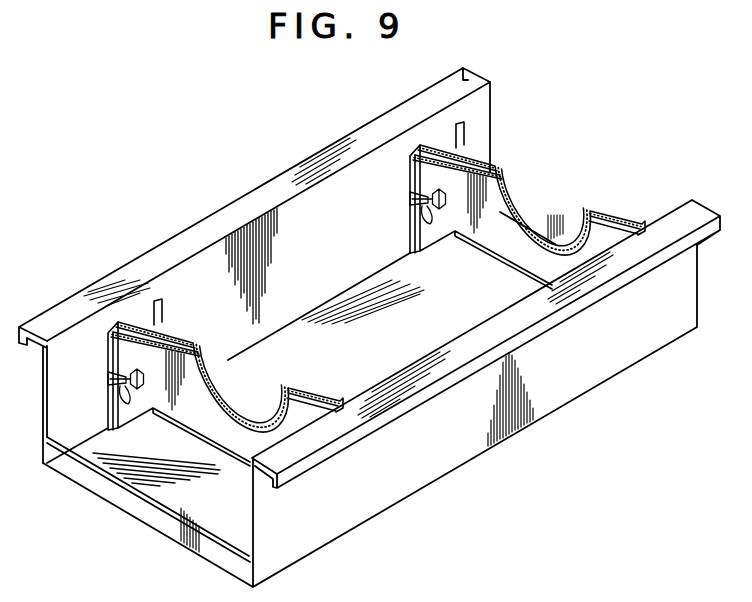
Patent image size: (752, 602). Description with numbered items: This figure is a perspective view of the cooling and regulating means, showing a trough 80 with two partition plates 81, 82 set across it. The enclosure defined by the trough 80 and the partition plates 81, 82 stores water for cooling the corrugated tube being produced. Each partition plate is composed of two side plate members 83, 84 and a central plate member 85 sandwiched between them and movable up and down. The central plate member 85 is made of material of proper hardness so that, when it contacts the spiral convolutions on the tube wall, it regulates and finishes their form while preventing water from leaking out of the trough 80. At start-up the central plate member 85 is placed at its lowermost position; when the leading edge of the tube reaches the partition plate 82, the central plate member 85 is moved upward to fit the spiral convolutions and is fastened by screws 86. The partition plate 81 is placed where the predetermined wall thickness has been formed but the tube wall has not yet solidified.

The trough 80 is at (477, 462).
The partition plate 81 is at (231, 436).
The partition plate 82 is at (523, 243).
The side plate member 83 is at (201, 362).
The side plate member 84 is at (315, 392).
The central plate member 85 is at (240, 414).
The screws 86 is at (115, 392).